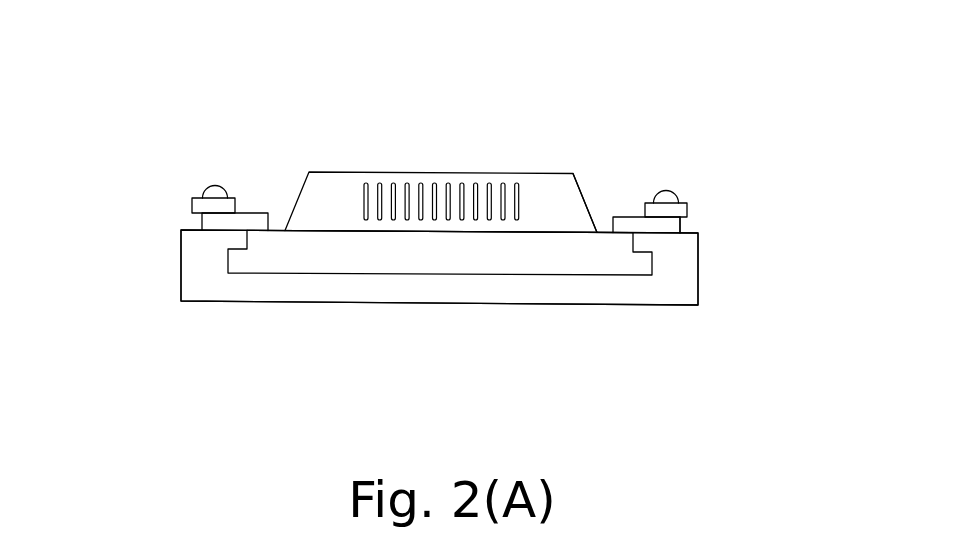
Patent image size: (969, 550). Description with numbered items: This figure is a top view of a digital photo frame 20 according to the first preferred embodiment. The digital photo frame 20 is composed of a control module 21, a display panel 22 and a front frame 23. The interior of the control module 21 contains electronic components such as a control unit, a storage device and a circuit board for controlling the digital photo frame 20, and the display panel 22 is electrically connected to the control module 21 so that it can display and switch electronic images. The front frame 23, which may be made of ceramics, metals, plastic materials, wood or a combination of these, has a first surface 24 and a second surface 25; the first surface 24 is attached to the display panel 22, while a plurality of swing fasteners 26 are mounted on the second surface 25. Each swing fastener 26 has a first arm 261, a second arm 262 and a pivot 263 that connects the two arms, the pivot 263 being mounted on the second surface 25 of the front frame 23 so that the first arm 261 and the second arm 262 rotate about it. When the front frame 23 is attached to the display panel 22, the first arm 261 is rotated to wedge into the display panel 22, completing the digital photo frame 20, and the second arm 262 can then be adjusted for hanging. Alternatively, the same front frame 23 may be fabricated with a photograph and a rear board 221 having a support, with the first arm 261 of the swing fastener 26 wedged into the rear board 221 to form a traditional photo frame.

The digital photo frame 20 is at (230, 45).
The control module 21 is at (442, 172).
The display panel 22 is at (285, 248).
The rear board 221 is at (595, 231).
The front frame 23 is at (698, 283).
The first surface 24 is at (377, 274).
The second surface 25 is at (688, 227).
The swing fastener 26 is at (439, 178).
The first arm 261 is at (202, 218).
The second arm 262 is at (192, 205).
The pivot 263 is at (210, 190).